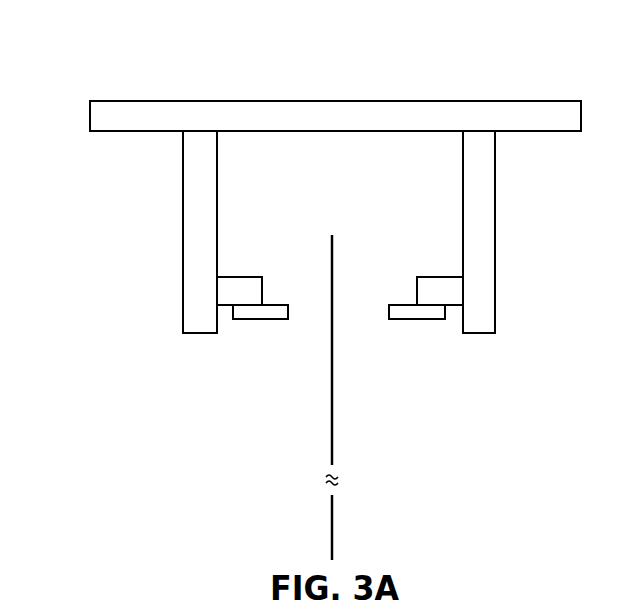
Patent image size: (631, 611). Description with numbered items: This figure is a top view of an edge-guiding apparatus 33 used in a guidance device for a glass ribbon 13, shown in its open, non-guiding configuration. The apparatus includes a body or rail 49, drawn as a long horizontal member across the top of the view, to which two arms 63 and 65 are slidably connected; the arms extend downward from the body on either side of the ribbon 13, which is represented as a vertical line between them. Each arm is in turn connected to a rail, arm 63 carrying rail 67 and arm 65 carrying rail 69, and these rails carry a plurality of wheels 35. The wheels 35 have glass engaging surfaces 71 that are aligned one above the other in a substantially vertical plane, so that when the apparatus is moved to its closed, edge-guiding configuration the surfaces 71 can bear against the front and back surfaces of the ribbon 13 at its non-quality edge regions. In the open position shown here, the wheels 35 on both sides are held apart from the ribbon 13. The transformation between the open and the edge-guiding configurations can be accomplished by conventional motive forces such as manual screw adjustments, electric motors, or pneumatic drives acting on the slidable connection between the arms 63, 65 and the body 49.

The ribbon 13 is at (330, 410).
The edge-guiding apparatus 33 is at (410, 64).
The wheels 35 is at (247, 312).
The body or rail 49 is at (135, 110).
The arm 63 is at (190, 233).
The arm 65 is at (488, 262).
The rail 67 is at (235, 283).
The rail 69 is at (434, 285).
The glass engaging surfaces 71 is at (288, 312).